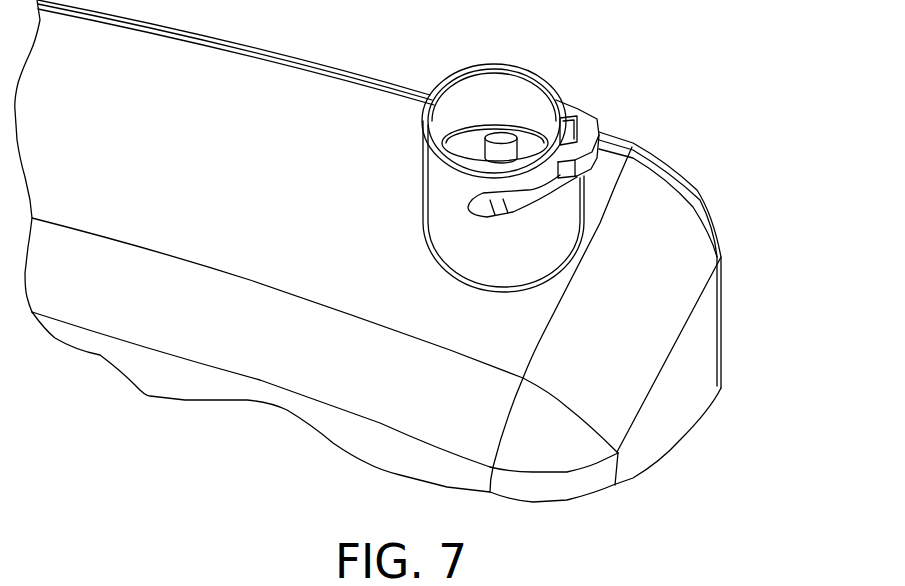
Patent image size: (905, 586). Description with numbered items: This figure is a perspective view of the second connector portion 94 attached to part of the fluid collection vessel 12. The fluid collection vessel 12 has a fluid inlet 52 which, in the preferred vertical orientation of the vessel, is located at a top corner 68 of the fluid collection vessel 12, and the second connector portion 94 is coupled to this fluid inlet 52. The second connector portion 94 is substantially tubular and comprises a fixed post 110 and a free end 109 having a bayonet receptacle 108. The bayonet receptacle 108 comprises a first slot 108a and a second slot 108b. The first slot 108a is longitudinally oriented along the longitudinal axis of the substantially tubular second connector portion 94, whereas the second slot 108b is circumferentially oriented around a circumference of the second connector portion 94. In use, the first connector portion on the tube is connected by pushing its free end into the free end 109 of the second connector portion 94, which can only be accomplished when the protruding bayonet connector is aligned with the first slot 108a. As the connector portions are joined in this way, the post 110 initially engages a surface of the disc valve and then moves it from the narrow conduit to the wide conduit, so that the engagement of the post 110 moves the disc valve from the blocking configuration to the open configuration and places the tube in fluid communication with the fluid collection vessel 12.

The fluid collection vessel 12 is at (732, 290).
The fluid inlet 52 is at (417, 209).
The top corner 68 is at (689, 181).
The second connector portion 94 is at (545, 66).
The bayonet receptacle 108 is at (600, 125).
The first slot 108a is at (576, 114).
The second slot 108b is at (503, 216).
The free end 109 is at (446, 80).
The fixed post 110 is at (499, 137).